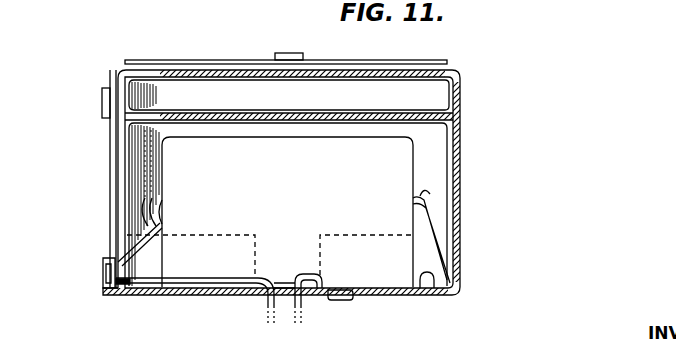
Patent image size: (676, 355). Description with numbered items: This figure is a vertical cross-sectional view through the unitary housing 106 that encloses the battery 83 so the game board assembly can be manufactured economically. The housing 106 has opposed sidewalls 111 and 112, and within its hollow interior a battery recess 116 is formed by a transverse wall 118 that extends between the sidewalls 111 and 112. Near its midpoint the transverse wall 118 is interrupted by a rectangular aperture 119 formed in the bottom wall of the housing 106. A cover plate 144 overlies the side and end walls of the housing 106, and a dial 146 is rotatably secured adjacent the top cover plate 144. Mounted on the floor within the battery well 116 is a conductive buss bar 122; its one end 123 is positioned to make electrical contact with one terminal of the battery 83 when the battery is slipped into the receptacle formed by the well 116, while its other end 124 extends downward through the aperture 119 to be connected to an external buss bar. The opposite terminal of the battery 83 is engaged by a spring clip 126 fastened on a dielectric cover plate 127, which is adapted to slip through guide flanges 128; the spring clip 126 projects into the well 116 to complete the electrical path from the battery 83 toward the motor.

The housing 106 is at (465, 173).
The sidewall 112 is at (458, 152).
The dial 146 is at (216, 62).
The cover plate 144 is at (392, 77).
The battery recess 116 is at (440, 138).
The dielectric cover plate 127 is at (115, 212).
The sidewall 111 is at (120, 160).
The guide flanges 128 is at (102, 98).
The battery 83 is at (303, 196).
The transverse wall 118 is at (445, 180).
The end of buss bar 123 is at (432, 224).
The spring clip 126 is at (150, 240).
The conductive buss bar 122 is at (415, 287).
The rectangular aperture 119 is at (267, 298).
The other end of buss bar 124 is at (300, 305).